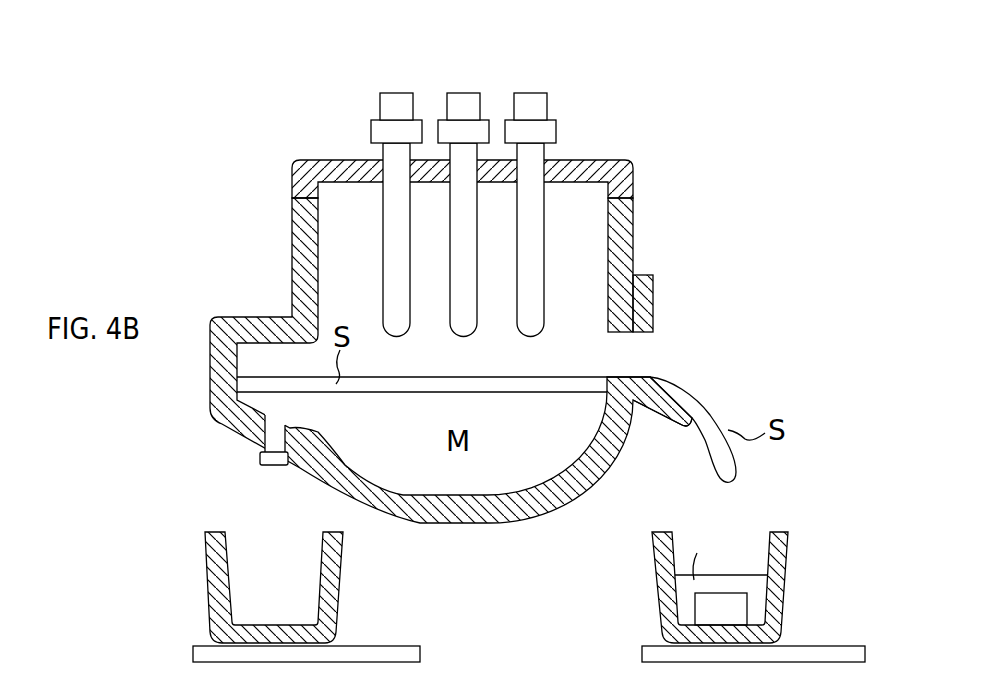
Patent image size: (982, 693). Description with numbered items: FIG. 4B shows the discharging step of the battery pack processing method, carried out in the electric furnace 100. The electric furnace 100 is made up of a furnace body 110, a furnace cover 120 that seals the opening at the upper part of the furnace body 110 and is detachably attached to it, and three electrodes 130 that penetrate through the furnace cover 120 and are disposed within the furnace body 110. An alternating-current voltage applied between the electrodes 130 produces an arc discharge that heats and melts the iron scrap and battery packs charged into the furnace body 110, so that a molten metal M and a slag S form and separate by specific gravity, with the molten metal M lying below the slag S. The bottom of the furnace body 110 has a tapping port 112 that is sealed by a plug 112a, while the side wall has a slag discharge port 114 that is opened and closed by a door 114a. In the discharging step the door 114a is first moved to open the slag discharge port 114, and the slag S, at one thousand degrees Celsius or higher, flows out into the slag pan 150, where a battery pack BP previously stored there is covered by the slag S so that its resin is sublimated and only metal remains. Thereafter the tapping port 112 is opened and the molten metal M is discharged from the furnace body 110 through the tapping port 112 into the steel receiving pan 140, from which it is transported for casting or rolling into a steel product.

The electric furnace 100 is at (660, 82).
The furnace body 110 is at (636, 211).
The tapping port 112 is at (263, 446).
The plug 112a is at (272, 468).
The slag discharge port 114 is at (613, 333).
The door 114a is at (655, 299).
The furnace cover 120 is at (590, 158).
The electrodes 130 is at (533, 92).
The steel receiving pan 140 is at (347, 558).
The slag pan 150 is at (790, 558).